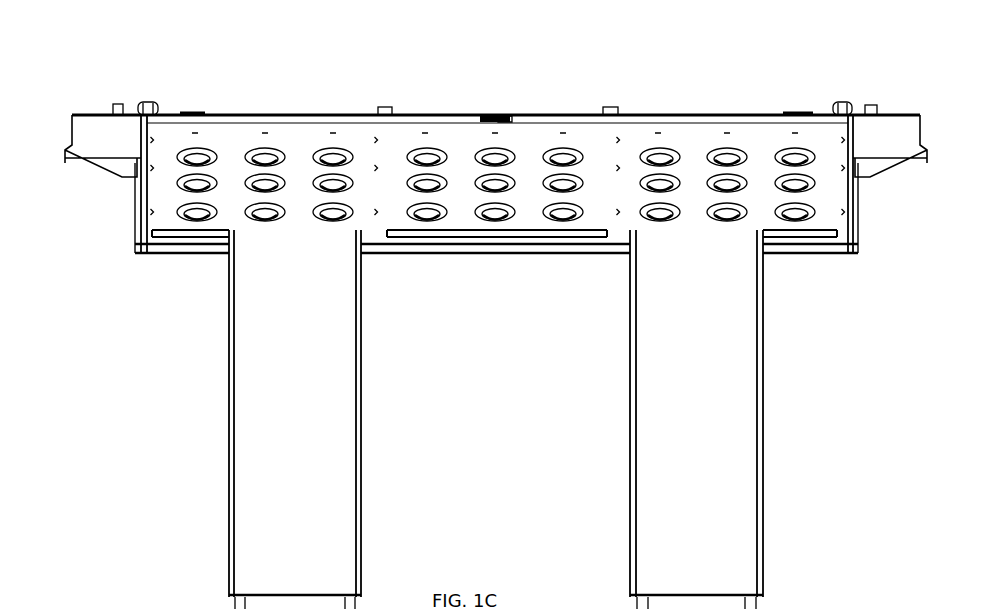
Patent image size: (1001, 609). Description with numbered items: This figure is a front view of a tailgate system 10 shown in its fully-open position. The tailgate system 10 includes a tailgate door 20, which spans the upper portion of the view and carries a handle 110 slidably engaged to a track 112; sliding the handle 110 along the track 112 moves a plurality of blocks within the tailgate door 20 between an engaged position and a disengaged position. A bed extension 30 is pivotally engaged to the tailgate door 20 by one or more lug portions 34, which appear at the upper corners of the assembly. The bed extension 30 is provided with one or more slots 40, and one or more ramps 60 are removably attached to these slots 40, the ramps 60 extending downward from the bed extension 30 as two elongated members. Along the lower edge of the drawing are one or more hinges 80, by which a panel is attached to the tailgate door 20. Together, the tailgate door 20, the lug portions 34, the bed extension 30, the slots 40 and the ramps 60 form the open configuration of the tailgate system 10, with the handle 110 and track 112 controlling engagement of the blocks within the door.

The tailgate system 10 is at (851, 457).
The tailgate door 20 is at (112, 132).
The bed extension 30 is at (410, 138).
The lug portion 34 is at (143, 105).
The slot 40 is at (192, 235).
The ramp 60 is at (257, 482).
The hinge 80 is at (493, 595).
The handle 110 is at (487, 118).
The track 112 is at (508, 118).